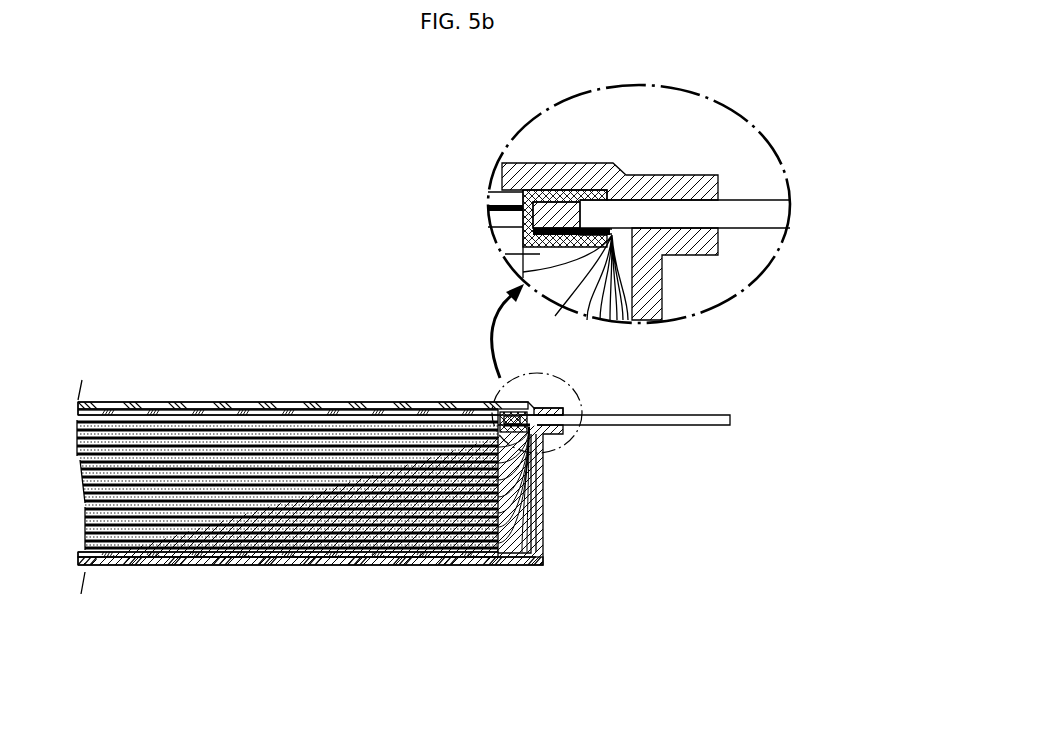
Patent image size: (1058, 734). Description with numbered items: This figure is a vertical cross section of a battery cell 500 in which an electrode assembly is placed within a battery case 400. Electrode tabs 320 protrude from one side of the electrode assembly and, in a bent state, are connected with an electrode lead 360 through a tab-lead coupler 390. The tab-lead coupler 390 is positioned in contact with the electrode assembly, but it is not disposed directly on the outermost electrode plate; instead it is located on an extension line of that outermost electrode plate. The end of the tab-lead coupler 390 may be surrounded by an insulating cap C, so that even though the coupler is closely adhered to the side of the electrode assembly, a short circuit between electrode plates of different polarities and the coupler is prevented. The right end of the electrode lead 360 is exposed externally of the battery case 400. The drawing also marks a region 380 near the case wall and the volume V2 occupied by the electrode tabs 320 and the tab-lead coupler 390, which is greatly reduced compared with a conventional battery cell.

The battery cell 500 is at (133, 272).
The battery case 400 is at (276, 402).
The tab-lead coupler 390 is at (497, 408).
The electrode lead 360 is at (698, 415).
The electrode tabs 320 is at (520, 529).
The insulating film 380 is at (533, 543).
The insulating cap C is at (590, 197).
The volume V2 is at (560, 593).